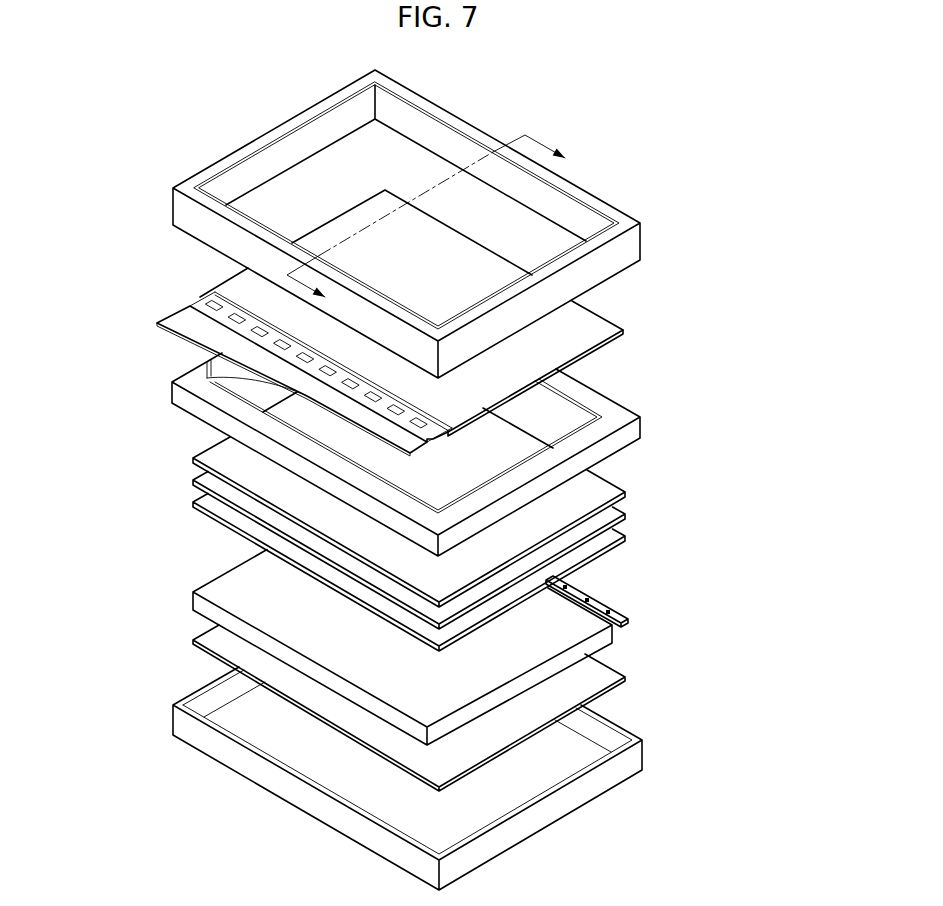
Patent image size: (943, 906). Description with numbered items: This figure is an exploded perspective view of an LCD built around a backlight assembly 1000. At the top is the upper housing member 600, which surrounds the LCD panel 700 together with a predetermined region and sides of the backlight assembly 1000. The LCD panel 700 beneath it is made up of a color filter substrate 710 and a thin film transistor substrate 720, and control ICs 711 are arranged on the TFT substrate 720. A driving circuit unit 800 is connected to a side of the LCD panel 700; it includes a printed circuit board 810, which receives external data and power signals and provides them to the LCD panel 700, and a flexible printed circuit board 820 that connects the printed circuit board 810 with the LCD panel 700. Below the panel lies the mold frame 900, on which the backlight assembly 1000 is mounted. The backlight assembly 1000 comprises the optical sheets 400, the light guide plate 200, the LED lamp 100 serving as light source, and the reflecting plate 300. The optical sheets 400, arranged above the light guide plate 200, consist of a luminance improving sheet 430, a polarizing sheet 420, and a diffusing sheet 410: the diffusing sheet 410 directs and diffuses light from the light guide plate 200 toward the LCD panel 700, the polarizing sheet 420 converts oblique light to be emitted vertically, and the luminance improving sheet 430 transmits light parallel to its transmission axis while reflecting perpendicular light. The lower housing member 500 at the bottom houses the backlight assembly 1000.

The LED lamp 100 is at (610, 593).
The light guide plate 200 is at (612, 637).
The reflecting plate 300 is at (625, 679).
The optical sheets 400 is at (490, 544).
The diffusing sheet 410 is at (625, 538).
The polarizing sheet 420 is at (625, 516).
The luminance improving sheet 430 is at (625, 494).
The lower housing member 500 is at (642, 755).
The upper housing member 600 is at (640, 252).
The LCD panel 700 is at (436, 337).
The color filter substrate 710 is at (623, 329).
The control ICs 711 is at (200, 292).
The TFT substrate 720 is at (623, 334).
The driving circuit unit 800 is at (242, 374).
The printed circuit board 810 is at (160, 325).
The flexible printed circuit board 820 is at (197, 305).
The mold frame 900 is at (640, 428).
The backlight assembly 1000 is at (519, 614).